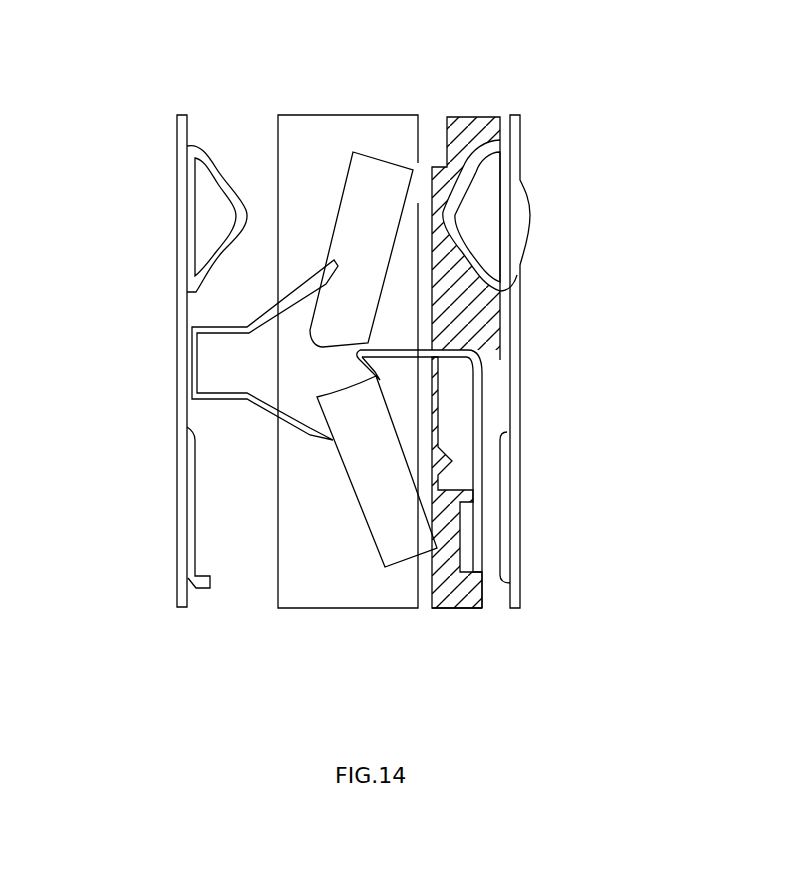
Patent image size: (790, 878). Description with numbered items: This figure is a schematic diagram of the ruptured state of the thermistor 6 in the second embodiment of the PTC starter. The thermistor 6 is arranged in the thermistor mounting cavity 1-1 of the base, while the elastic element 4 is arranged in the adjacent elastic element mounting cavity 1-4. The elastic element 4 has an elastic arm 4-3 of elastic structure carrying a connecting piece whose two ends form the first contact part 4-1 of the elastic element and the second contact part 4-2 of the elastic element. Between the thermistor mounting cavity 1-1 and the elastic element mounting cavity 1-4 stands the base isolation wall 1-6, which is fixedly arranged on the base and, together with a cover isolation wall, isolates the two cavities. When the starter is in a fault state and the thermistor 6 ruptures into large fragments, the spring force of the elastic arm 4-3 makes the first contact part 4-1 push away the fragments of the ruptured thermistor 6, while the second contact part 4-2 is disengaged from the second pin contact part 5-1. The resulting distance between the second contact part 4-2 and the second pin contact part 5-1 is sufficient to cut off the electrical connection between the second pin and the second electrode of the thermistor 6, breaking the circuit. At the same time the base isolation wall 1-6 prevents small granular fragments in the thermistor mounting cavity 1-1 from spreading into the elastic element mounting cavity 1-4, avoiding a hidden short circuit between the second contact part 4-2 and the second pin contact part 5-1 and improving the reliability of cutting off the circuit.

The thermistor mounting cavity 1-1 is at (360, 575).
The elastic element mounting cavity 1-4 is at (505, 385).
The base isolation wall 1-6 is at (430, 407).
The elastic element 4 is at (487, 577).
The first contact part of the elastic element 4-1 is at (358, 362).
The second contact part of the elastic element 4-2 is at (492, 352).
The elastic arm 4-3 is at (487, 380).
The second pin contact part 5-1 is at (492, 344).
The thermistor 6 is at (366, 215).